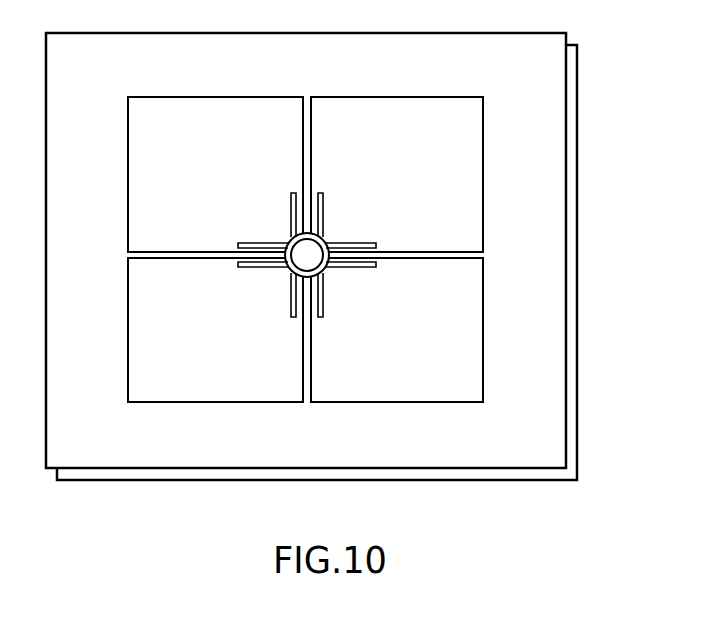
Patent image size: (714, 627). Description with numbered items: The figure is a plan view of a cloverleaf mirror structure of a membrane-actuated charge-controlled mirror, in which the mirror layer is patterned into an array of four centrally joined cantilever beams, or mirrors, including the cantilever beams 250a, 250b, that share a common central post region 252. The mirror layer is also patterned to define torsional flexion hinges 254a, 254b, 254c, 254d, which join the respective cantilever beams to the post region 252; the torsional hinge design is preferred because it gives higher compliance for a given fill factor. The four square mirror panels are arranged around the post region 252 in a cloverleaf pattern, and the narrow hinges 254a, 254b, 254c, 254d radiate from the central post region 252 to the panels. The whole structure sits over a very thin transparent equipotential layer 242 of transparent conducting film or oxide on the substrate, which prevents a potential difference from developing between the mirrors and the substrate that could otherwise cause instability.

The transparent equipotential layer 242 is at (548, 228).
The cantilever beam 250a is at (148, 165).
The cantilever beam 250b is at (460, 143).
The post region 252 is at (309, 252).
The torsional flexion hinge 254a is at (281, 231).
The torsional flexion hinge 254b is at (333, 232).
The torsional flexion hinge 254c is at (281, 275).
The torsional flexion hinge 254d is at (333, 275).